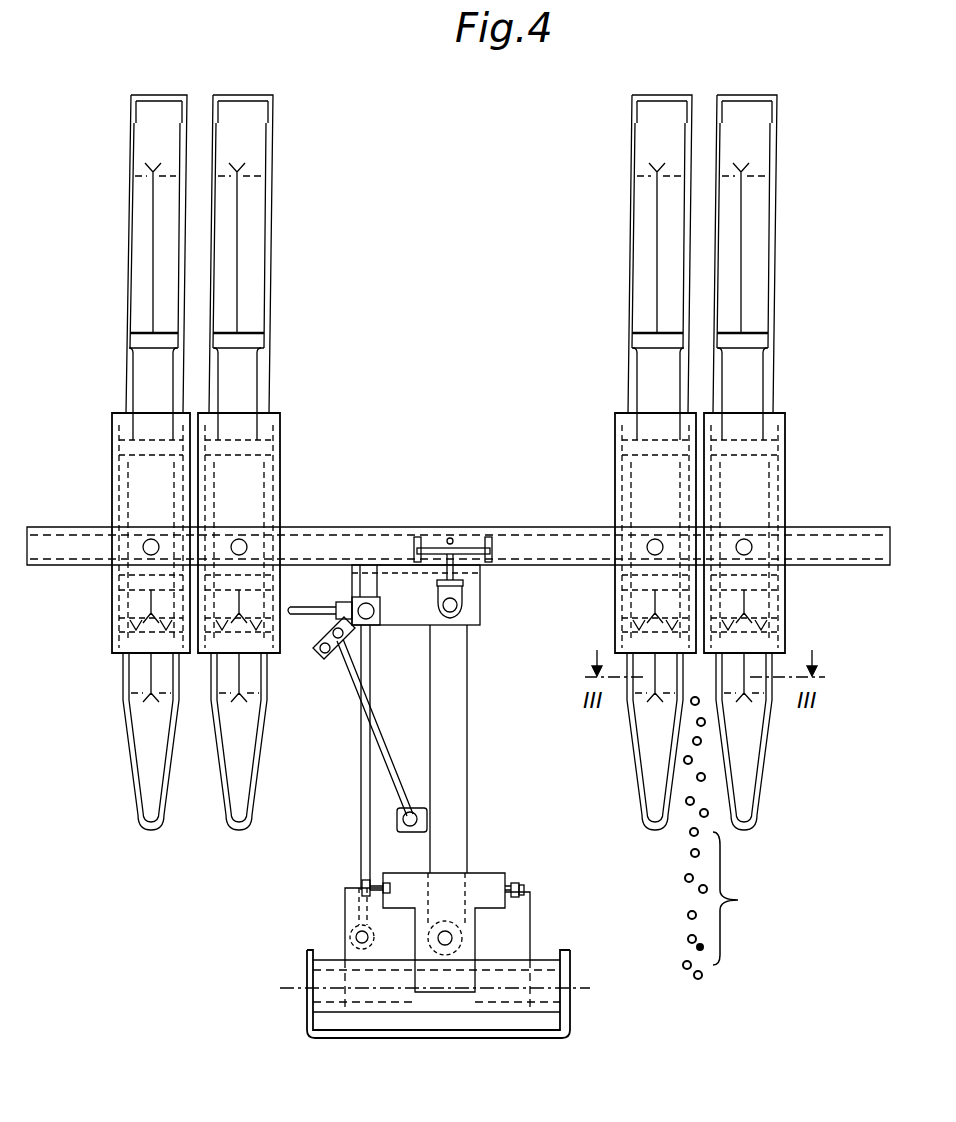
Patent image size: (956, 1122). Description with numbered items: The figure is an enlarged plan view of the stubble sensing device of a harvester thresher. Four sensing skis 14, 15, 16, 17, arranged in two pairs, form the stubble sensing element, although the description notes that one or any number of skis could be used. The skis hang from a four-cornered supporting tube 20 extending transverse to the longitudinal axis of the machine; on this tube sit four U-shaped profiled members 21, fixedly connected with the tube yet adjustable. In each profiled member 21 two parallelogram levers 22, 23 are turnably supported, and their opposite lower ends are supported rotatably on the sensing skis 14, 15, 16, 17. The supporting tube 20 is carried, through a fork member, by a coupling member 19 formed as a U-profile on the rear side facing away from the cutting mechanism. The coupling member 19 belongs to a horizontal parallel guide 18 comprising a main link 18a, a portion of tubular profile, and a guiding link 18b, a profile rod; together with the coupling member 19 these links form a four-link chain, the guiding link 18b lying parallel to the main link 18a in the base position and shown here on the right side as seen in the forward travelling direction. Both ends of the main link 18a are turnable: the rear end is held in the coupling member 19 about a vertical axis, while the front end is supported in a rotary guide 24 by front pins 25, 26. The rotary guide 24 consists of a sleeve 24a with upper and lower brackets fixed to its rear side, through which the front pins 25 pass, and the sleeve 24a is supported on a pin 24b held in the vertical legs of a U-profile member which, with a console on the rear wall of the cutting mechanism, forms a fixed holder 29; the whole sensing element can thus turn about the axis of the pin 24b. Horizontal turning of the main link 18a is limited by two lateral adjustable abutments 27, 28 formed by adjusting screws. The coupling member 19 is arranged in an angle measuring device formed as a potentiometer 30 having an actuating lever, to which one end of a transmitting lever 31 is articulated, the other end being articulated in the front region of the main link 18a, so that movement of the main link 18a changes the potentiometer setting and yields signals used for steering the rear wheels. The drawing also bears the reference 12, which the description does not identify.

The granular material / pellets 12 is at (736, 838).
The sensing ski 14 is at (745, 108).
The sensing ski 15 is at (652, 108).
The sensing ski 16 is at (240, 112).
The sensing ski 17 is at (147, 112).
The horizontal parallel guide 18 is at (472, 721).
The main link 18a is at (450, 763).
The guiding link 18b is at (360, 800).
The coupling member 19 is at (402, 593).
The supporting tube 20 is at (313, 547).
The U-shaped profiled member 21 is at (233, 470).
The parallelogram lever 22 is at (235, 603).
The parallelogram lever 23 is at (245, 380).
The rotary guide 24 is at (331, 952).
The sleeve 24a is at (385, 995).
The pin 24b is at (510, 985).
The front pin 25 is at (460, 935).
The front pin 26 is at (457, 607).
The adjustable abutment 27 is at (512, 886).
The adjustable abutment 28 is at (385, 875).
The fixed holder 29 is at (306, 962).
The potentiometer 30 is at (362, 565).
The transmitting lever 31 is at (360, 698).